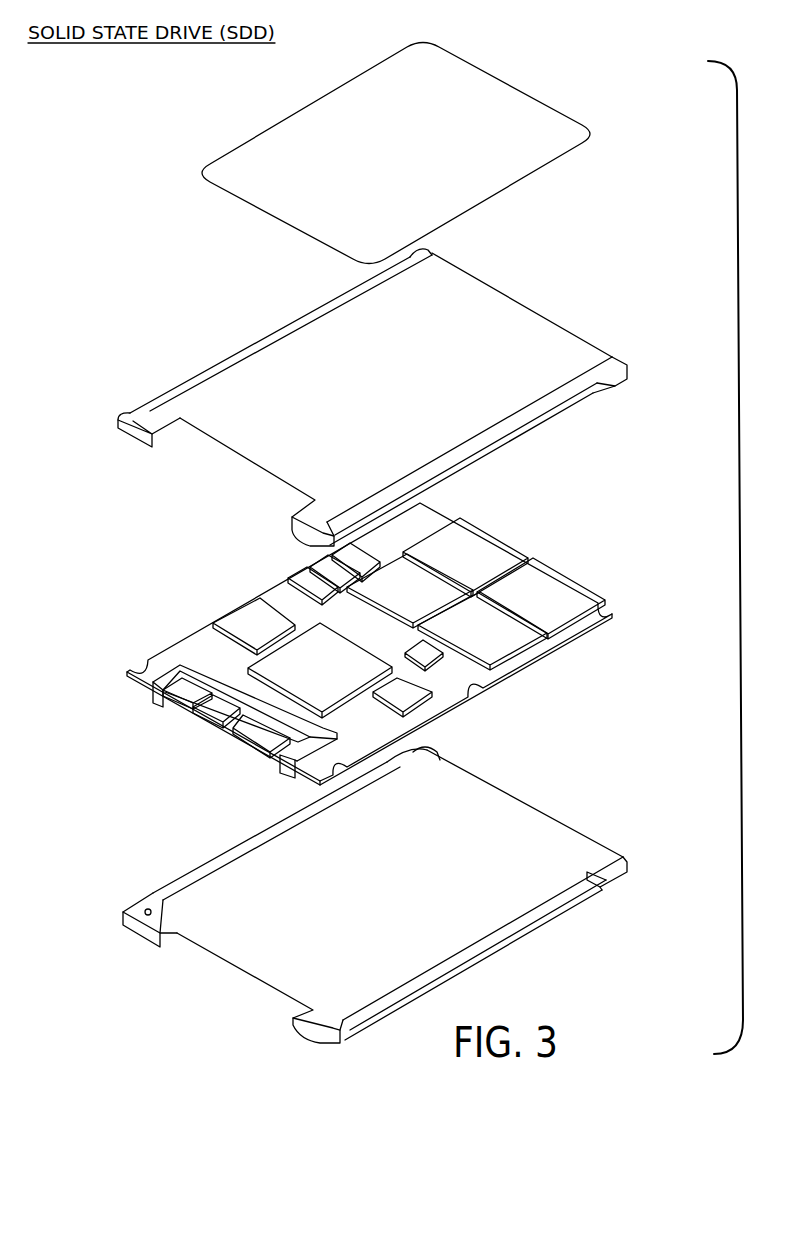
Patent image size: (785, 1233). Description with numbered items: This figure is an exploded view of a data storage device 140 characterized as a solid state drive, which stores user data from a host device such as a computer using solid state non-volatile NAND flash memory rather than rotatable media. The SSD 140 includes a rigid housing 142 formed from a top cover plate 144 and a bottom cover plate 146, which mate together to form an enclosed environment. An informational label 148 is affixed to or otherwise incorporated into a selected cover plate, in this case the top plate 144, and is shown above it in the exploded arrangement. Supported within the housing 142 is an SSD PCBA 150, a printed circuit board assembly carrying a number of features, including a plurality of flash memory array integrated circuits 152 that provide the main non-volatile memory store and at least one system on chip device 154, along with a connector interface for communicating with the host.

The data storage device 140 is at (146, 132).
The rigid housing 142 is at (116, 553).
The top cover plate 144 is at (507, 327).
The bottom cover plate 146 is at (502, 827).
The informational label 148 is at (497, 98).
The SSD PCBA 150 is at (183, 650).
The flash memory array integrated circuits 152 is at (497, 557).
The system on chip (SOC) device 154 is at (290, 662).